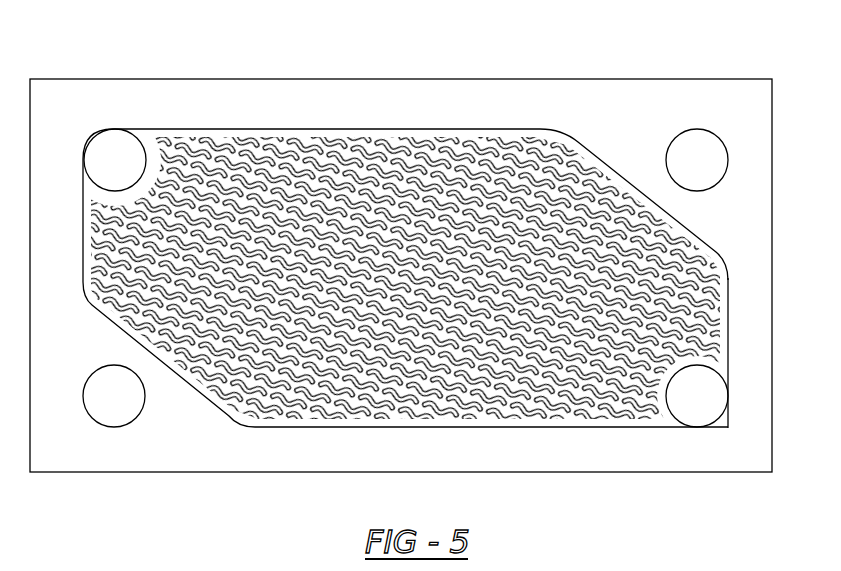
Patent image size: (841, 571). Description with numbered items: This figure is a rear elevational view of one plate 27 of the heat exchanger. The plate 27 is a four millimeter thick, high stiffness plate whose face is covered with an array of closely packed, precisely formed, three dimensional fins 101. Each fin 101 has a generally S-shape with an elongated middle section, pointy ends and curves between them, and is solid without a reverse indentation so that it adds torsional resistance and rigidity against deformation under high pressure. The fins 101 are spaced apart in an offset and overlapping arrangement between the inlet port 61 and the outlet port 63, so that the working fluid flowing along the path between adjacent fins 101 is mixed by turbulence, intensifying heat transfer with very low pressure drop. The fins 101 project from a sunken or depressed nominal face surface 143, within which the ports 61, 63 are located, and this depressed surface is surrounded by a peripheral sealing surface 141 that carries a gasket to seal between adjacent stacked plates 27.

The plate 27 is at (603, 110).
The inlet port 61 is at (693, 410).
The outlet port 63 is at (112, 152).
The fins 101 is at (238, 146).
The sealing surface 141 is at (742, 215).
The depressed nominal face surface 143 is at (717, 327).